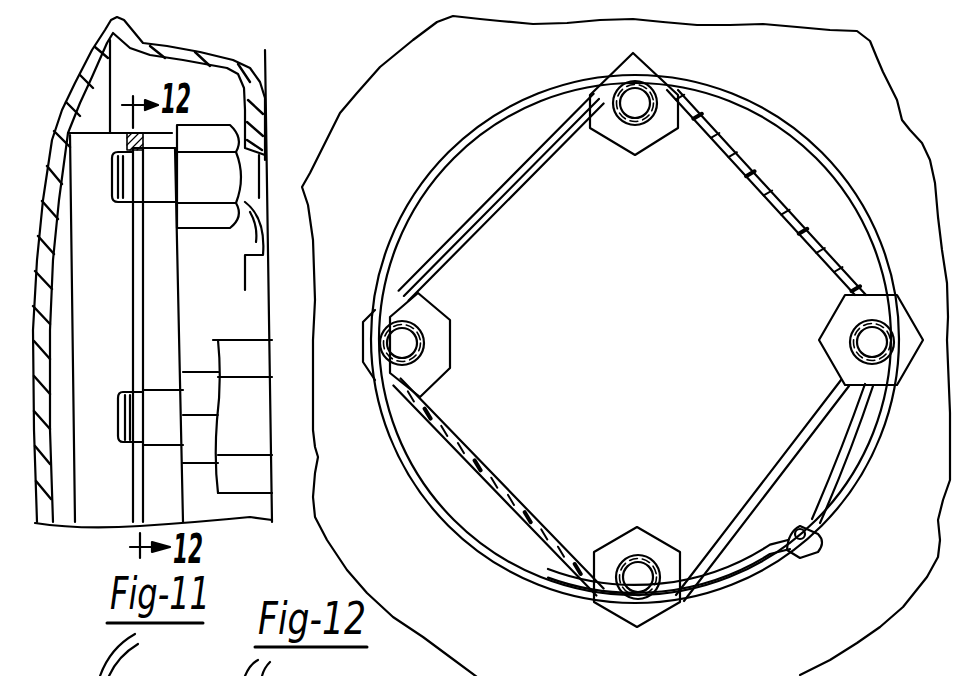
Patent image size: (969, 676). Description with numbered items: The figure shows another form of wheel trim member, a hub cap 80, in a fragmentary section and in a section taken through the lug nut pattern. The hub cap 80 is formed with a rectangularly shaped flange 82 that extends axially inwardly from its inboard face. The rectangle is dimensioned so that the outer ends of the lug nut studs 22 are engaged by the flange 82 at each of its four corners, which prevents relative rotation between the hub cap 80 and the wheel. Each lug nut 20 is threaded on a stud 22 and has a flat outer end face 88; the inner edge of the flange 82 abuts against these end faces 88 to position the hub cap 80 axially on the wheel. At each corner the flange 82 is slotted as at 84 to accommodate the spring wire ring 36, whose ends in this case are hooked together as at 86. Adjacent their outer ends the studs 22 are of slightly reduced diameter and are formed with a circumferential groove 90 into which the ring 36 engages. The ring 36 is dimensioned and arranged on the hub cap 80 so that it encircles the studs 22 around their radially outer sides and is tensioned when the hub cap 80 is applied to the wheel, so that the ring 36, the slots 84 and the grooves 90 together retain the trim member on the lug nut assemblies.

In FIG. 11, the lug nut 20 is at (255, 155).
In FIG. 12, the lug nut 20 is at (453, 350).
In FIG. 11, the lug nut stud 22 is at (157, 200).
In FIG. 12, the lug nut stud 22 is at (413, 333).
In FIG. 11, the spring wire ring 36 is at (133, 290).
In FIG. 12, the spring wire ring 36 is at (490, 558).
In FIG. 11, the hub cap 80 is at (58, 107).
In FIG. 12, the hub cap 80 is at (871, 632).
In FIG. 11, the rectangularly shaped flange 82 is at (94, 142).
In FIG. 12, the rectangularly shaped flange 82 is at (495, 203).
In FIG. 11, the slot 84 is at (142, 128).
In FIG. 12, the hooked ends 86 is at (825, 545).
In FIG. 11, the flat outer end face 88 is at (175, 213).
In FIG. 12, the flat outer end face 88 is at (637, 543).
In FIG. 11, the circumferential groove 90 is at (131, 200).